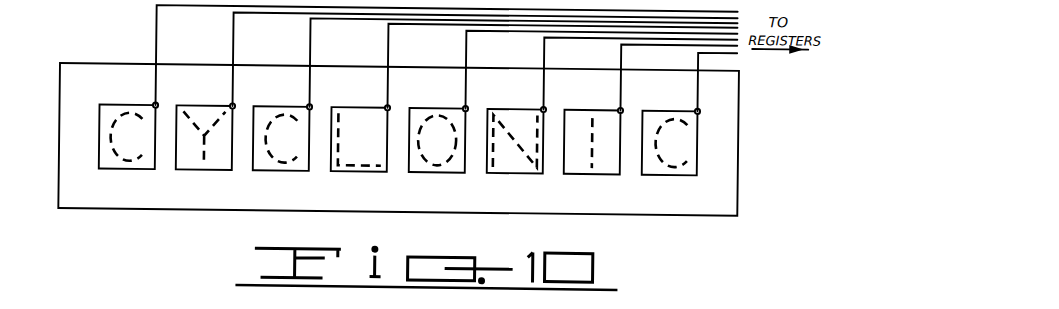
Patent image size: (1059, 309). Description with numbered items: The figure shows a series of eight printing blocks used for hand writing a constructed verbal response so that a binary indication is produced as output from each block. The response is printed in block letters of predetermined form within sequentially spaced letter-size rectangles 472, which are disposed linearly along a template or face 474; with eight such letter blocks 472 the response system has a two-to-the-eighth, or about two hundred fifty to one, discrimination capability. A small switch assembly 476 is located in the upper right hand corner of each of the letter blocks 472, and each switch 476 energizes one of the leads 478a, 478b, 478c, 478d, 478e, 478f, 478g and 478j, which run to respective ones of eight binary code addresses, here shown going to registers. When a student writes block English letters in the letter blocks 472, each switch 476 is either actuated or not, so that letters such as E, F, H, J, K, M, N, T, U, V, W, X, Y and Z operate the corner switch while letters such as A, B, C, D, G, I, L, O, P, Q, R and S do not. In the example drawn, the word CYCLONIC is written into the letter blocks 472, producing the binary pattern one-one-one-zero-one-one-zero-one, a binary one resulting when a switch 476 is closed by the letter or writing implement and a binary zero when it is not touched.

The letter blocks 472 is at (116, 168).
The template or face 474 is at (60, 183).
The switch assembly 476 is at (158, 103).
The lead 478a is at (156, 38).
The lead 478b is at (233, 43).
The lead 478c is at (310, 46).
The lead 478d is at (388, 48).
The lead 478e is at (466, 50).
The lead 478f is at (544, 52).
The lead 478g is at (700, 82).
The output lead to register 478j is at (621, 54).